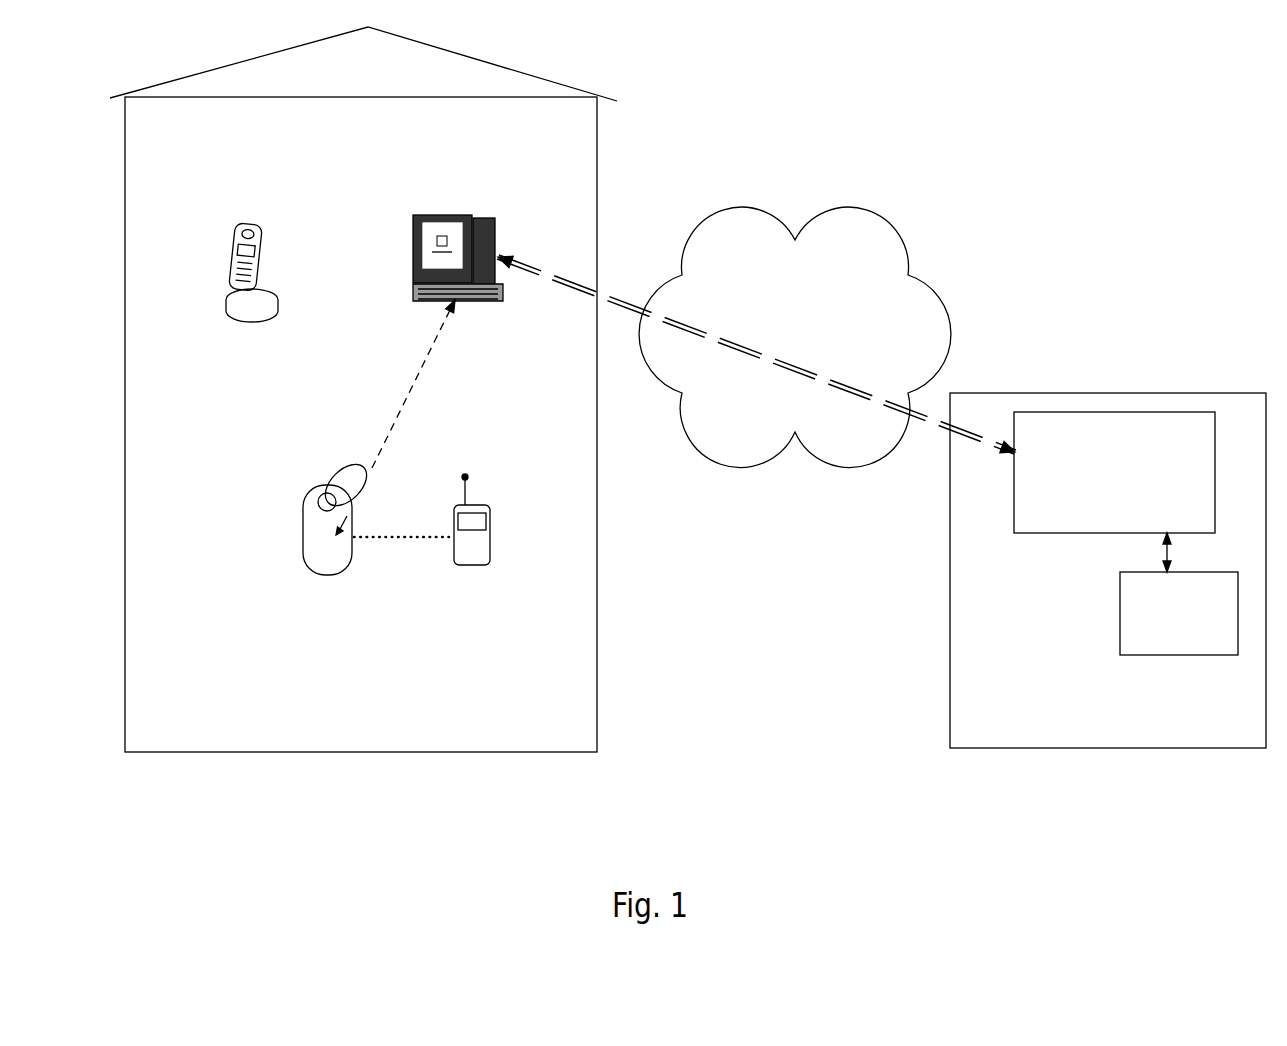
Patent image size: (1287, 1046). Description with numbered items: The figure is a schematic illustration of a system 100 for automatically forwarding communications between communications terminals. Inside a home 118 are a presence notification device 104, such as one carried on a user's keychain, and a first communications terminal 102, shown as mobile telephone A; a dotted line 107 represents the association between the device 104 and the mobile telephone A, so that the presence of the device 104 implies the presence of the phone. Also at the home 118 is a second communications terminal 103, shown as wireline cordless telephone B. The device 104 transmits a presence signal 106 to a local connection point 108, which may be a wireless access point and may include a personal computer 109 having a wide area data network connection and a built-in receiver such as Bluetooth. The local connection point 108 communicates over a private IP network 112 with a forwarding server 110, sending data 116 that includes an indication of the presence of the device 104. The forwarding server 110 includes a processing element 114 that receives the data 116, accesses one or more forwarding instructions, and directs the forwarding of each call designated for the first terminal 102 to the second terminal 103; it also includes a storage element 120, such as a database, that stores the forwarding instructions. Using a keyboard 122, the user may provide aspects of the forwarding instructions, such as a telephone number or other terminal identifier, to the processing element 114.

The system 100 is at (1125, 147).
The first communications terminal 102 is at (492, 530).
The second communications terminal 103 is at (262, 252).
The presence notification device 104 is at (315, 535).
The presence signal 106 is at (423, 372).
The dotted line 107 is at (405, 537).
The local connection point 108 is at (478, 254).
The personal computer 109 is at (495, 233).
The forwarding server 110 is at (1070, 585).
The private IP network 112 is at (883, 248).
The processing element 114 is at (1053, 522).
The data 116 is at (800, 375).
The home 118 is at (618, 138).
The storage element 120 is at (1127, 630).
The keyboard 122 is at (467, 293).